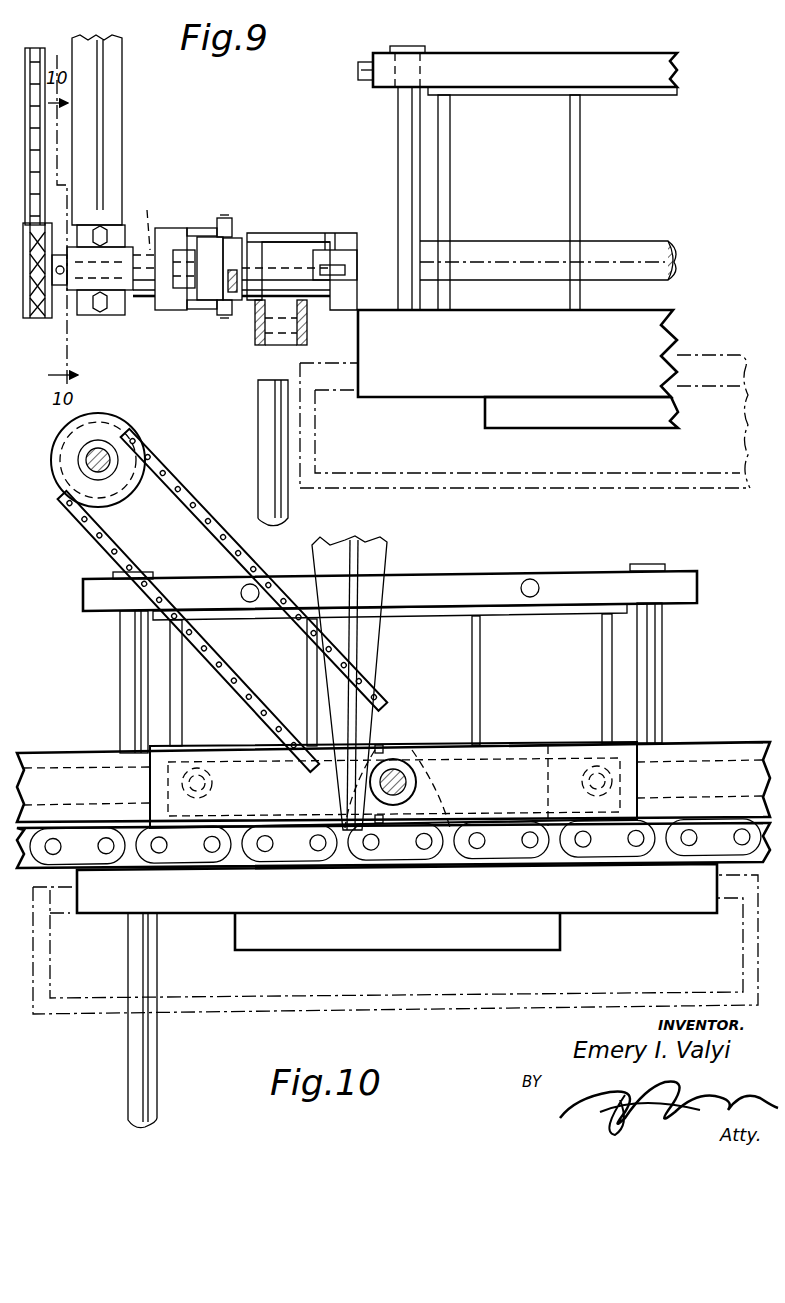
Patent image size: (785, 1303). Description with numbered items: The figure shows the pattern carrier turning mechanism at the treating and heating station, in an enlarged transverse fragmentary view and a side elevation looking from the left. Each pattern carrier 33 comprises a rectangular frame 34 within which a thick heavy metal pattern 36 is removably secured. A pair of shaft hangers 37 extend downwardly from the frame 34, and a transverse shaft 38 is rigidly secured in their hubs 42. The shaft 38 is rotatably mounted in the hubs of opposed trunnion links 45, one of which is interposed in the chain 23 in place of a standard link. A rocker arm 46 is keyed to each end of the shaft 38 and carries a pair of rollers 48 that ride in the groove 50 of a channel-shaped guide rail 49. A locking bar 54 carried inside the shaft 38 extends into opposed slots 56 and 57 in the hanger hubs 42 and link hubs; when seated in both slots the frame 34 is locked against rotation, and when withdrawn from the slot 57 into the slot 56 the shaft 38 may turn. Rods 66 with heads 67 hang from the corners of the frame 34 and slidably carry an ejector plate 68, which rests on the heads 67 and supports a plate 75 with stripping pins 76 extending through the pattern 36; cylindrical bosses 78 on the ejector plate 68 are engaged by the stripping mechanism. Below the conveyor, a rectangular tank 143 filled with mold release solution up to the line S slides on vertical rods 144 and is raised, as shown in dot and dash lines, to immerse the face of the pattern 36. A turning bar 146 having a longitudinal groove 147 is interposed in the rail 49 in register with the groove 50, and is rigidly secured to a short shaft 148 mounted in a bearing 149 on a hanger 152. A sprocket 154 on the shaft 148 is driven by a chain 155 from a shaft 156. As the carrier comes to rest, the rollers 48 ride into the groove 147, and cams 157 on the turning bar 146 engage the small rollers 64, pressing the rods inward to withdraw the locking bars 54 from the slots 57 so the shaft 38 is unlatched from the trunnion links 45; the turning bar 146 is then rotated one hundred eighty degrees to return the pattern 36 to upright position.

In FIG. 9, the chain 23 is at (272, 346).
In FIG. 10, the chain 23 is at (298, 866).
In FIG. 9, the pattern carrier 33 is at (438, 400).
In FIG. 10, the pattern carrier 33 is at (680, 916).
In FIG. 9, the rectangular frame 34 is at (517, 353).
In FIG. 10, the rectangular frame 34 is at (397, 888).
In FIG. 9, the pattern 36 is at (545, 430).
In FIG. 10, the pattern 36 is at (448, 948).
In FIG. 9, the shaft hanger 37 is at (388, 310).
In FIG. 10, the shaft hanger 37 is at (455, 797).
In FIG. 9, the transverse shaft 38 is at (545, 250).
In FIG. 9, the hanger hub 42 is at (365, 240).
In FIG. 9, the trunnion link 45 is at (257, 338).
In FIG. 10, the trunnion link 45 is at (402, 852).
In FIG. 9, the rocker arm 46 is at (247, 255).
In FIG. 10, the rocker arm 46 is at (232, 748).
In FIG. 9, the roller 48 is at (184, 290).
In FIG. 10, the roller 48 is at (213, 786).
In FIG. 9, the channel-shaped guide rail 49 is at (286, 282).
In FIG. 10, the channel-shaped guide rail 49 is at (42, 758).
In FIG. 10, the groove 50 is at (78, 768).
In FIG. 9, the locking bar 54 is at (338, 250).
In FIG. 9, the slot 56 is at (346, 270).
In FIG. 9, the slot 57 is at (325, 250).
In FIG. 9, the small roller 64 is at (232, 224).
In FIG. 9, the rod 66 is at (398, 155).
In FIG. 10, the rod 66 is at (120, 658).
In FIG. 9, the head 67 is at (413, 46).
In FIG. 10, the head 67 is at (115, 572).
In FIG. 9, the ejector plate 68 is at (545, 62).
In FIG. 10, the ejector plate 68 is at (485, 578).
In FIG. 9, the plate 75 is at (522, 95).
In FIG. 10, the plate 75 is at (276, 618).
In FIG. 9, the stripping pin 76 is at (450, 195).
In FIG. 10, the stripping pin 76 is at (182, 705).
In FIG. 9, the cylindrical boss 78 is at (358, 78).
In FIG. 10, the cylindrical boss 78 is at (241, 594).
In FIG. 9, the tank 143 is at (640, 493).
In FIG. 10, the tank 143 is at (305, 1012).
In FIG. 9, the vertical rod 144 is at (258, 482).
In FIG. 10, the vertical rod 144 is at (128, 1085).
In FIG. 9, the turning bar 146 is at (172, 310).
In FIG. 10, the turning bar 146 is at (422, 748).
In FIG. 9, the longitudinal groove 147 is at (197, 237).
In FIG. 10, the longitudinal groove 147 is at (548, 748).
In FIG. 9, the short shaft 148 is at (150, 250).
In FIG. 10, the short shaft 148 is at (406, 782).
In FIG. 9, the bearing 149 is at (128, 312).
In FIG. 9, the hanger 152 is at (115, 162).
In FIG. 10, the hanger 152 is at (385, 556).
In FIG. 9, the sprocket 154 is at (30, 318).
In FIG. 9, the chain 155 is at (44, 50).
In FIG. 10, the chain 155 is at (218, 540).
In FIG. 10, the shaft 156 is at (90, 468).
In FIG. 9, the cam 157 is at (205, 228).
In FIG. 9, the station S is at (340, 390).
In FIG. 10, the station S is at (68, 922).